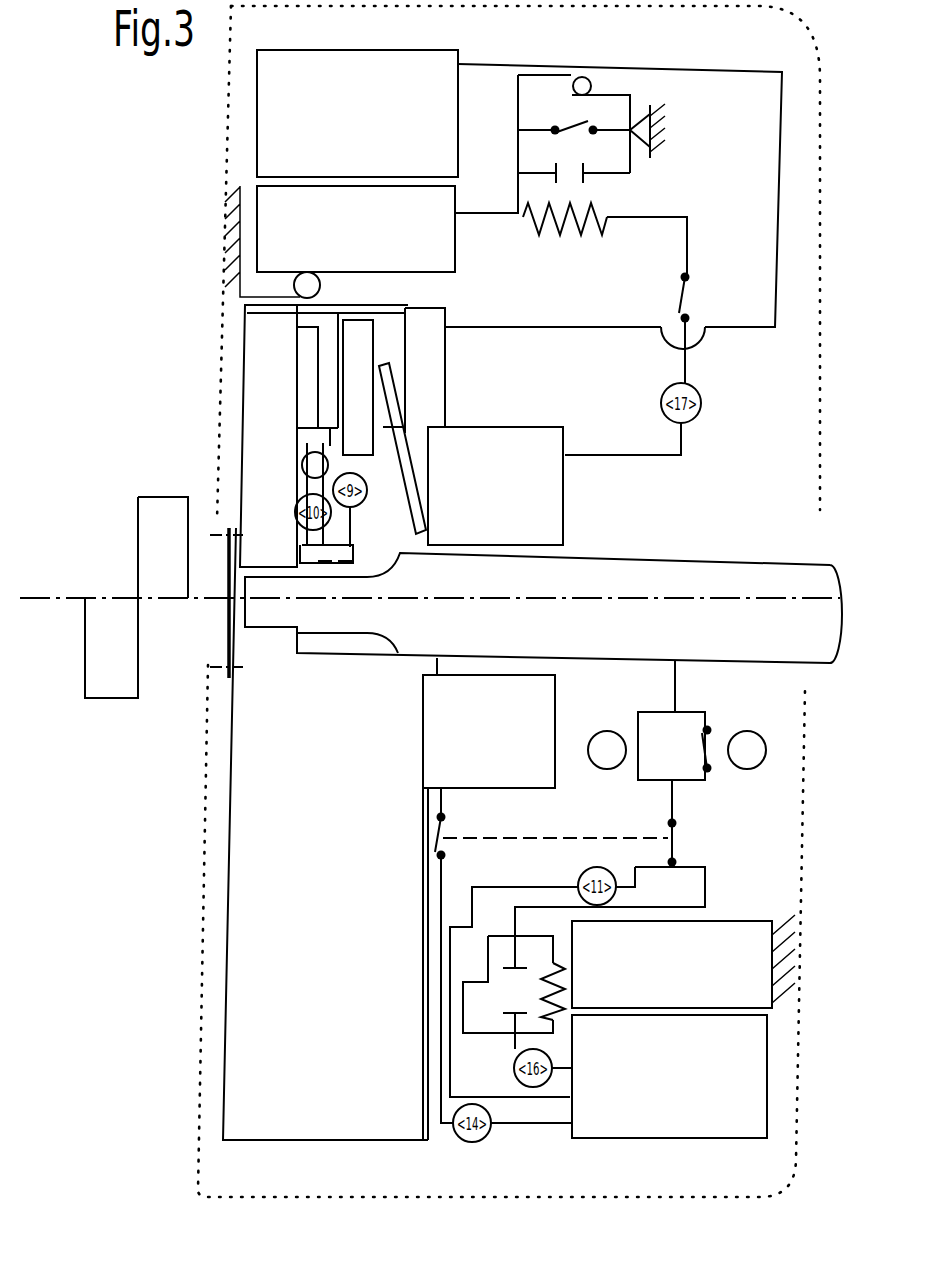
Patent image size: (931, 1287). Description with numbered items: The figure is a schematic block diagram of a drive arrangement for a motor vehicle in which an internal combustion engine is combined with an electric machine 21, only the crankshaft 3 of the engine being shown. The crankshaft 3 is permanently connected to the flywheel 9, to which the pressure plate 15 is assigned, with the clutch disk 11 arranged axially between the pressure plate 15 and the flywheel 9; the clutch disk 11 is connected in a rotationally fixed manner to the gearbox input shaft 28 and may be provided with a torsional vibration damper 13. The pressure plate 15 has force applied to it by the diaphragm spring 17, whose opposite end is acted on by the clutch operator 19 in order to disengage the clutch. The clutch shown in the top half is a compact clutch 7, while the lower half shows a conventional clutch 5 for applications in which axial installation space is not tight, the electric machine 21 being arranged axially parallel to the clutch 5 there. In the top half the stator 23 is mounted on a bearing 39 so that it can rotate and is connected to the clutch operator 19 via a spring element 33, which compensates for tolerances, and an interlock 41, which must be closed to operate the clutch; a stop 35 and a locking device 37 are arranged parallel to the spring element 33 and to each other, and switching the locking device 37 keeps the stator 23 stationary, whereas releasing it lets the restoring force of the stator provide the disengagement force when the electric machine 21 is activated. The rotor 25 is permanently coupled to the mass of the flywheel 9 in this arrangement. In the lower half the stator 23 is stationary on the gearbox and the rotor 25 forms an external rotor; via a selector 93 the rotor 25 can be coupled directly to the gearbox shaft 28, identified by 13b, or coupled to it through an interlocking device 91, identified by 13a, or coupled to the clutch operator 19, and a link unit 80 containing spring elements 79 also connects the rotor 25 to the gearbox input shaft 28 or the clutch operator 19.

The crankshaft 3 is at (198, 607).
The conventional clutch 5 is at (252, 851).
The compact clutch 7 is at (243, 329).
The flywheel 9 is at (263, 415).
The clutch disk 11 is at (310, 365).
The torsional vibration damper 13 is at (303, 451).
The coupling via interlocking device 13a is at (747, 750).
The direct coupling 13b is at (607, 750).
The pressure plate 15 is at (367, 335).
The diaphragm spring 17 is at (410, 430).
The clutch operator 19 is at (543, 437).
The electric machine 21 is at (497, 170).
The stator 23 is at (268, 232).
The rotor 25 is at (270, 118).
The gearbox input shaft 28 is at (742, 647).
The spring element 33 is at (578, 234).
The stop 35 is at (567, 173).
The locking device 37 is at (583, 118).
The bearing 39 is at (292, 283).
The interlock 41 is at (687, 295).
The spring elements 79 is at (563, 981).
The RC element 80 is at (469, 976).
The interlocking device 91 is at (700, 752).
The selector 93 is at (676, 845).